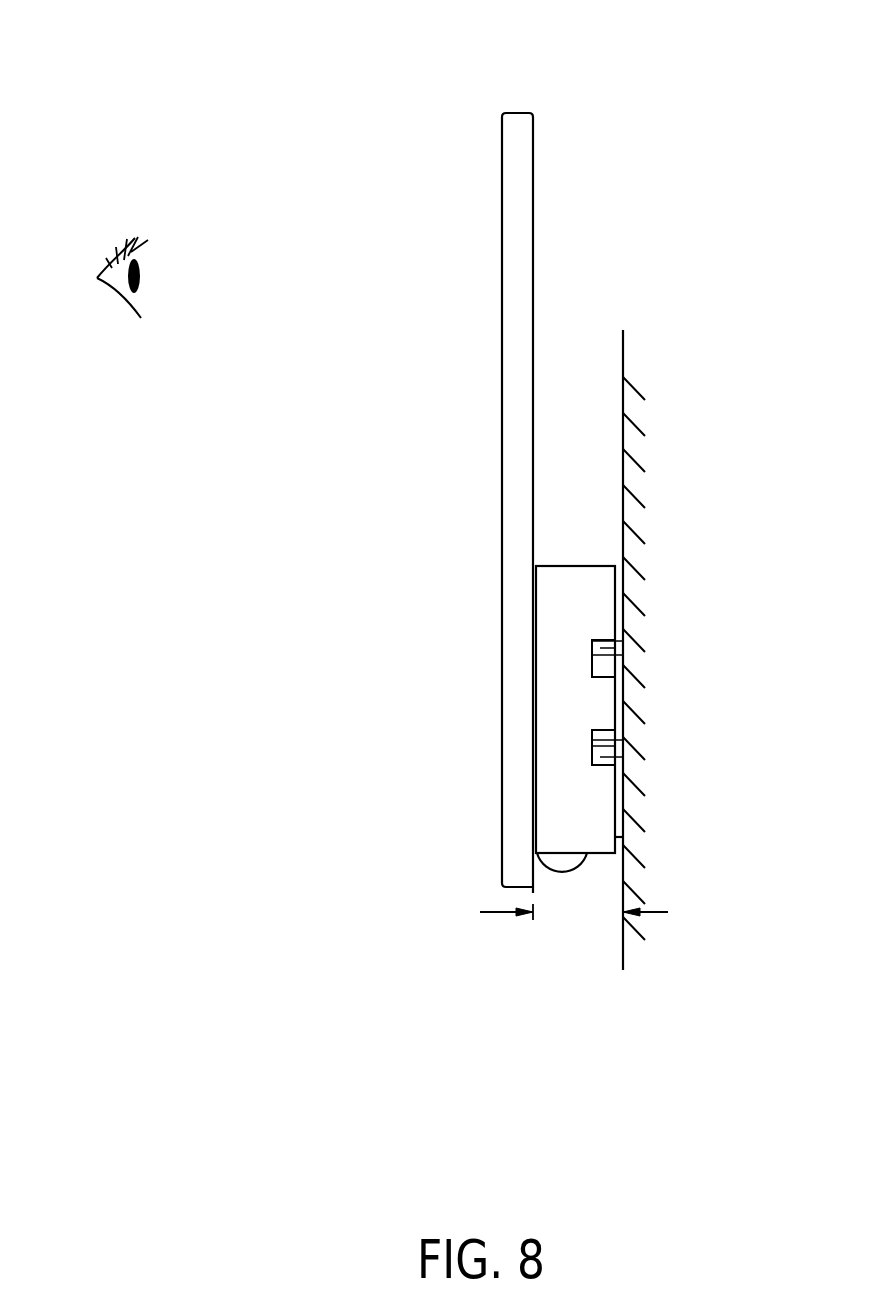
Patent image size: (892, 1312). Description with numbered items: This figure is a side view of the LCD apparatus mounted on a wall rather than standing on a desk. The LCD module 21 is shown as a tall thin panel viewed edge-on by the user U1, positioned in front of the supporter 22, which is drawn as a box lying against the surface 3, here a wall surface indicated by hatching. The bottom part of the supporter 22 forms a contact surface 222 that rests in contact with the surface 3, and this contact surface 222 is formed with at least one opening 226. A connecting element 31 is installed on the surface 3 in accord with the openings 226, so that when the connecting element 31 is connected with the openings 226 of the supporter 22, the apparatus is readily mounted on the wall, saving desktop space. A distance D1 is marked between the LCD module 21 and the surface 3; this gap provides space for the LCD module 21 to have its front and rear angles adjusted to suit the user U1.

The LCD module 21 is at (522, 122).
The supporter 22 is at (572, 582).
The surface 3 is at (623, 355).
The connecting element 31 is at (623, 647).
The opening 226 is at (623, 758).
The contact surface 222 is at (623, 838).
The user U1 is at (98, 279).
The distance D1 is at (574, 929).